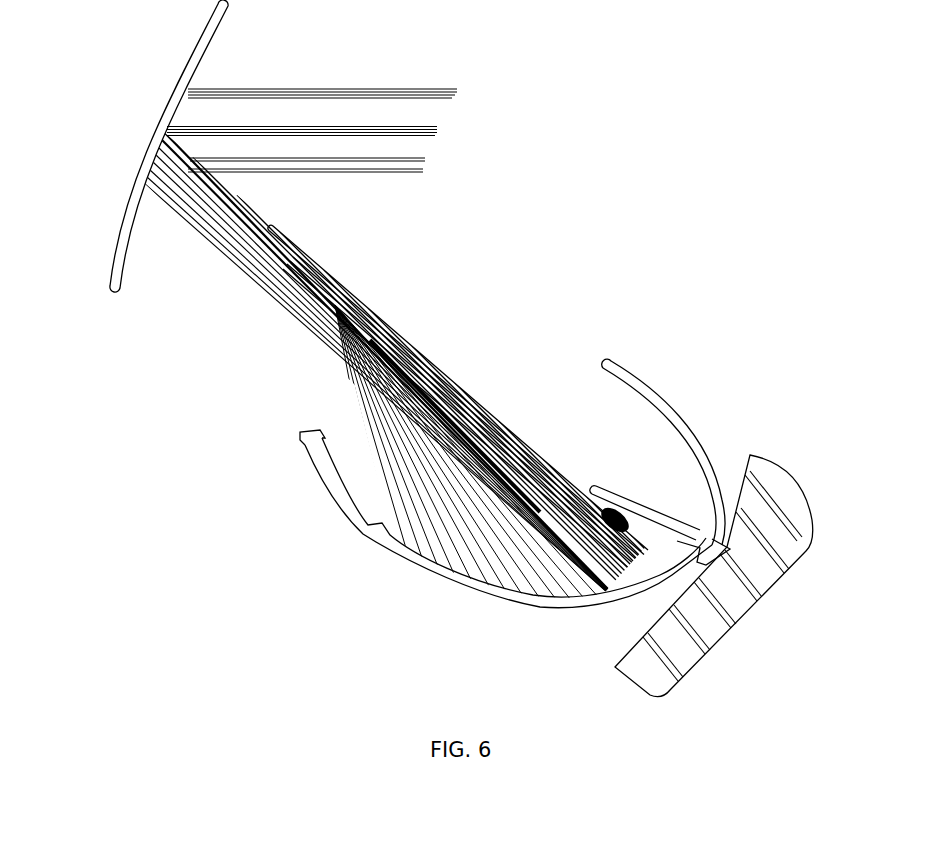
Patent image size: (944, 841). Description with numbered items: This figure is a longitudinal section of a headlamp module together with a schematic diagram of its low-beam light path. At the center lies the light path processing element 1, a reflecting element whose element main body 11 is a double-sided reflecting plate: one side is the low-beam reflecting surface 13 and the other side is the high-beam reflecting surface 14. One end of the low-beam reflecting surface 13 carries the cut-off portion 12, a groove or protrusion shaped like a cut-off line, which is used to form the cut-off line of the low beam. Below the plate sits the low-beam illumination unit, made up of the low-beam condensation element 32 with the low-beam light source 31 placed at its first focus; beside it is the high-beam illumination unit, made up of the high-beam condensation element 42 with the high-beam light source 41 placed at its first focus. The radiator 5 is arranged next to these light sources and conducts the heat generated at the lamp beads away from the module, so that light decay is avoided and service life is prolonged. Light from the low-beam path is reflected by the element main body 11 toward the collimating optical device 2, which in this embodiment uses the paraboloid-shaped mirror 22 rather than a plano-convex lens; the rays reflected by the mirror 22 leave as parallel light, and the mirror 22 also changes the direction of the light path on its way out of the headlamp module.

The light path processing element 1 is at (345, 272).
The element main body 11 is at (260, 255).
The cut-off portion 12 is at (427, 375).
The low-beam reflecting surface 13 is at (312, 300).
The high-beam reflecting surface 14 is at (413, 363).
The collimating optical device 2 is at (151, 117).
The mirror 22 is at (200, 63).
The low-beam light source 31 is at (567, 587).
The low-beam condensation element 32 is at (443, 570).
The high-beam light source 41 is at (693, 527).
The high-beam condensation element 42 is at (650, 393).
The radiator 5 is at (767, 473).